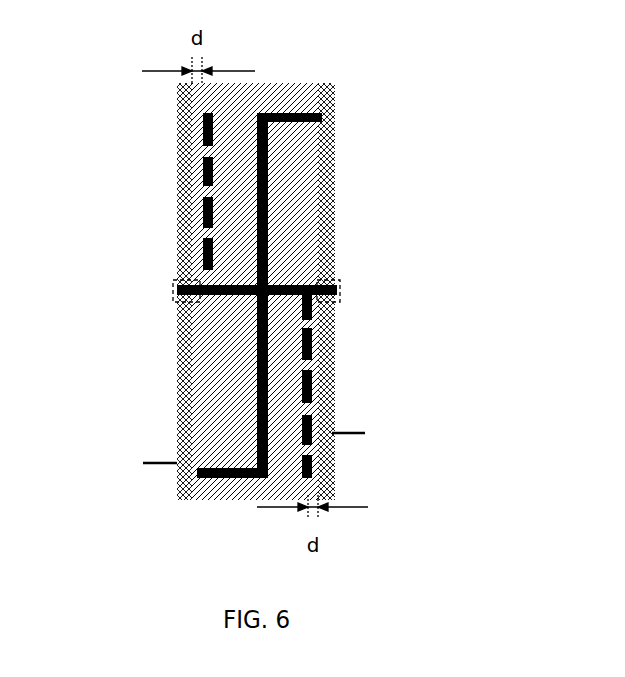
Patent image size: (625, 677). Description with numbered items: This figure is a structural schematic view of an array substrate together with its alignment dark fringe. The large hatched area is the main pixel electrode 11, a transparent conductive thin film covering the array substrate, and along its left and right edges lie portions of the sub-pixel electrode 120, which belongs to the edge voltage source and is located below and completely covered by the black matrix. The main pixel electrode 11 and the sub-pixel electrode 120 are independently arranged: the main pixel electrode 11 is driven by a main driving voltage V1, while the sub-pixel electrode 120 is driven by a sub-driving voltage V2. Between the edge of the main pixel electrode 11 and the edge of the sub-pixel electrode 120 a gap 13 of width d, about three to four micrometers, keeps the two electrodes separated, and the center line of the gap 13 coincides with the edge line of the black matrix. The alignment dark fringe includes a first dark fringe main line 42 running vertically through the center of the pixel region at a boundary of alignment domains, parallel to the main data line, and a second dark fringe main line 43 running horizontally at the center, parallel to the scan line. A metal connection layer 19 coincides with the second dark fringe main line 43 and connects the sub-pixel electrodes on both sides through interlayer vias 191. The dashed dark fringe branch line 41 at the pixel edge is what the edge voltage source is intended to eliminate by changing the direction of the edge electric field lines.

The main pixel electrode 11 is at (327, 175).
The gap 13 is at (198, 123).
The sub-pixel electrode 120 is at (333, 365).
The first dark fringe main line 42 is at (257, 226).
The second dark fringe main line 43 is at (228, 303).
The dark fringe branch line 41 is at (310, 455).
The metal connection layer 19 is at (185, 300).
The interlayer vias 191 is at (340, 280).
The main driving voltage V1 is at (140, 451).
The sub-driving voltage V2 is at (369, 438).